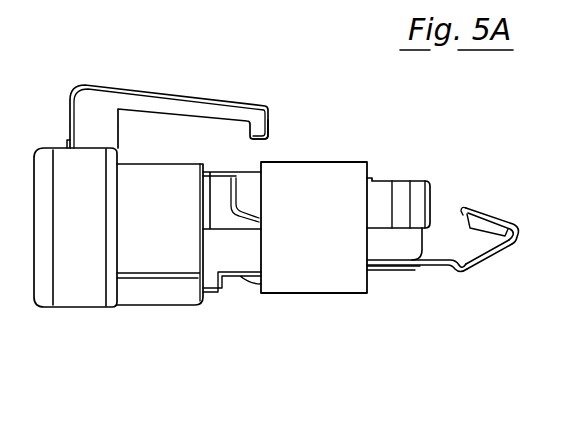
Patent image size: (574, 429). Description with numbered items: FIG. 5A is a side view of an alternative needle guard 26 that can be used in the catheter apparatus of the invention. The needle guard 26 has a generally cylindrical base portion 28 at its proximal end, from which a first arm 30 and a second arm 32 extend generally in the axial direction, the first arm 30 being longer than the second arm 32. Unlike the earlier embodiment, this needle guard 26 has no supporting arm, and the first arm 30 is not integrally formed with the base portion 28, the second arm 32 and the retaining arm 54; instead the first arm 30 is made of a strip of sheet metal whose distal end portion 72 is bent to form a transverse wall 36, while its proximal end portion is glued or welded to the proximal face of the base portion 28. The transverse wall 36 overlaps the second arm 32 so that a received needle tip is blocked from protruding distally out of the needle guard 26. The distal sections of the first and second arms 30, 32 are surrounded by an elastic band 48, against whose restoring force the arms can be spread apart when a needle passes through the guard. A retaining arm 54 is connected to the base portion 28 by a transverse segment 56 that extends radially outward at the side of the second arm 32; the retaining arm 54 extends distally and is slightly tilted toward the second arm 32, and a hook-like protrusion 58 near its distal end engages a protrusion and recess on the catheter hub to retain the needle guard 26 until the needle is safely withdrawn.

The needle guard 26 is at (132, 355).
The base portion 28 is at (78, 290).
The first arm 30 is at (426, 266).
The second arm 32 is at (402, 194).
The transverse wall 36 is at (515, 222).
The elastic band 48 is at (330, 162).
The retaining arm 54 is at (172, 105).
The transverse segment 56 is at (85, 131).
The hook-like protrusion 58 is at (255, 137).
The distal end portion 72 is at (500, 250).